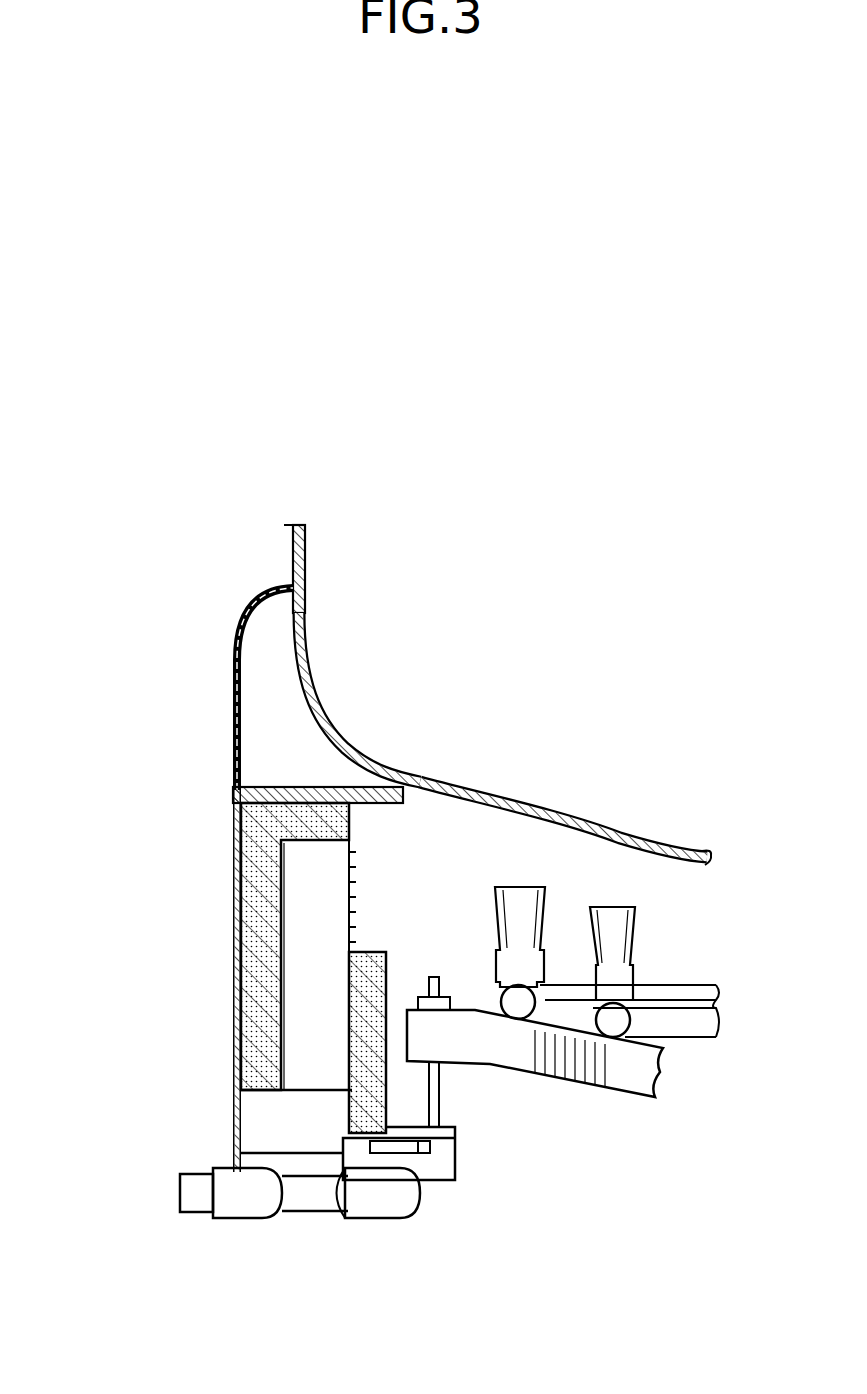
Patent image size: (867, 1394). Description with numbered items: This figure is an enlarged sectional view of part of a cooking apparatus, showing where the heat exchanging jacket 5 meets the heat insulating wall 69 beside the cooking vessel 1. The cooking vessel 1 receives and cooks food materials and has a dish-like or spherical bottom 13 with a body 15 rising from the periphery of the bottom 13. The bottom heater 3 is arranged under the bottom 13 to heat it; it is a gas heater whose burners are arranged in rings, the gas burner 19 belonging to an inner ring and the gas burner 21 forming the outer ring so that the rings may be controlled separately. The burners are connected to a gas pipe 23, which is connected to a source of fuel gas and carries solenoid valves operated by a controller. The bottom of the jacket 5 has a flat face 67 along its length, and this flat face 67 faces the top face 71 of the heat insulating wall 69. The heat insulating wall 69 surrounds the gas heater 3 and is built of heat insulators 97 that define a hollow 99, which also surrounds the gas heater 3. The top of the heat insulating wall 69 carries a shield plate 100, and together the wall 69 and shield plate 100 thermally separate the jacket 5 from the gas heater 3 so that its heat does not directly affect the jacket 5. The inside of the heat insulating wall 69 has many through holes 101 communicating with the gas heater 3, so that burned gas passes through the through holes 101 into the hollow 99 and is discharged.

The cooking vessel 1 is at (292, 545).
The bottom heater 3 is at (713, 1090).
The heat exchanging jacket 5 is at (232, 623).
The bottom 13 is at (700, 865).
The body 15 is at (292, 580).
The gas burner 19 is at (608, 985).
The gas burner 21 is at (515, 960).
The gas pipe 23 is at (300, 1215).
The flat face 67 is at (290, 790).
The heat insulating wall 69 is at (208, 967).
The top face 71 is at (330, 790).
The heat insulators 97 is at (352, 966).
The hollow 99 is at (243, 1082).
The shield plate 100 is at (415, 762).
The through holes 101 is at (352, 890).